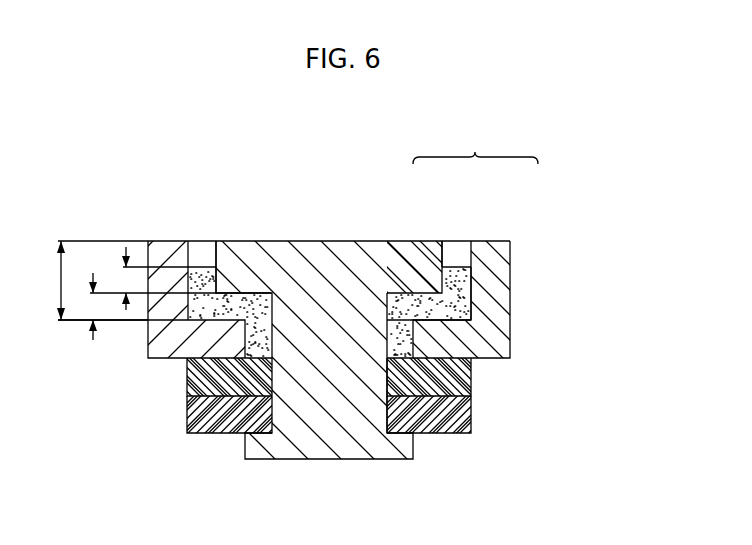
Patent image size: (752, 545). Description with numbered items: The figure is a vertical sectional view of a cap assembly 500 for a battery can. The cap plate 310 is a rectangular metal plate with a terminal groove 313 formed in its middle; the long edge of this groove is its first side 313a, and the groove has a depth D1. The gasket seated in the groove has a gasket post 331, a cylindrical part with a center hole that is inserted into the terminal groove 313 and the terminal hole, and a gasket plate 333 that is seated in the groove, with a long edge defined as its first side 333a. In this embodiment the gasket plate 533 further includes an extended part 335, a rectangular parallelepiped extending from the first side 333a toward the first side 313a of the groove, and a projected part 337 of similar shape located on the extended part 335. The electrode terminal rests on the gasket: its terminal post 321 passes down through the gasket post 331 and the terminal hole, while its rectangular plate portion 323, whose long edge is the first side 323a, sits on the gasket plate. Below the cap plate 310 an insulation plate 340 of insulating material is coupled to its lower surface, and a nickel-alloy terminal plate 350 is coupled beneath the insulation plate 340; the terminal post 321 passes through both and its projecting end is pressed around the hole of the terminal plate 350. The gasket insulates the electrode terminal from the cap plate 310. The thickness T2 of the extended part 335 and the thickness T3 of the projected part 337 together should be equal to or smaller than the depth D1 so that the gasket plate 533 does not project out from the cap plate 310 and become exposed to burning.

The cap assembly 500 is at (577, 228).
The cap plate 310 is at (502, 293).
The terminal groove 313 is at (197, 243).
The first side of the terminal groove 313a is at (192, 265).
The terminal post 321 is at (326, 422).
The plate portion 323 is at (286, 265).
The first side of the plate portion 323a is at (213, 265).
The gasket post 331 is at (257, 340).
The gasket plate 333 is at (413, 293).
The first side of the gasket plate 333a is at (474, 318).
The extended part 335 is at (474, 302).
The projected part 337 is at (459, 267).
The gasket plate 533 is at (475, 146).
The insulation plate 340 is at (466, 382).
The terminal plate 350 is at (468, 416).
The depth of the terminal groove D1 is at (90, 280).
The thickness of the extended part T2 is at (84, 306).
The thickness of the projected part T3 is at (115, 278).